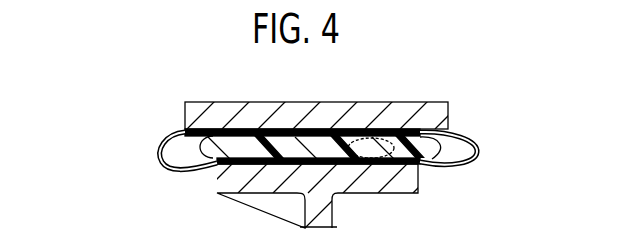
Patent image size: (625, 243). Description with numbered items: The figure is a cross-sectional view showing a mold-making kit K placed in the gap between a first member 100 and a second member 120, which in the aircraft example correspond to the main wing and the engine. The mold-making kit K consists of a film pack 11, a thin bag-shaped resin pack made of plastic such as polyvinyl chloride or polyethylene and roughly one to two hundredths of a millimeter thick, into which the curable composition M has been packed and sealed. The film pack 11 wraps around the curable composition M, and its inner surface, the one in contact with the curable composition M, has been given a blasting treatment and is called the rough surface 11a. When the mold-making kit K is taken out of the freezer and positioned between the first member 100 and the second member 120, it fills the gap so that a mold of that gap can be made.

The first member 100 is at (450, 112).
The second member 120 is at (410, 177).
The film pack 11 is at (474, 160).
The curable composition M is at (447, 133).
The rough surface 11a is at (380, 138).
The mold-making kit K is at (162, 134).